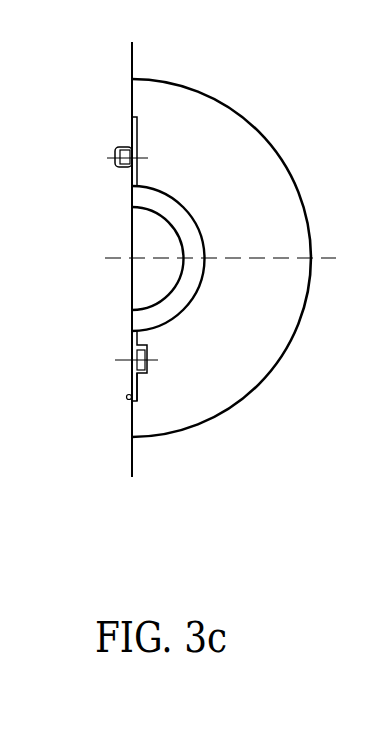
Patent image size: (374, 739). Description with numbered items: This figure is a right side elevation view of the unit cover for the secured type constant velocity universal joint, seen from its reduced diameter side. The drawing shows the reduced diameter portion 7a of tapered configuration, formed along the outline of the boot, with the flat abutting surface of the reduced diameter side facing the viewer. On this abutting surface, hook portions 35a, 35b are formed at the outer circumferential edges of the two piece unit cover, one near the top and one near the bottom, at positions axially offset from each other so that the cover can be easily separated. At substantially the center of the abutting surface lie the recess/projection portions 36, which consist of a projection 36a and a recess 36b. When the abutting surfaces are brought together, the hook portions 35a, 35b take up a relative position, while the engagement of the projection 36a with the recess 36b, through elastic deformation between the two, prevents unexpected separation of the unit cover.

The reduced diameter portion 7a is at (270, 207).
The hook portion 35a is at (132, 117).
The hook portion 35b is at (130, 394).
The recess/projection portions 36 is at (81, 260).
The projection 36a is at (118, 166).
The recess 36b is at (117, 325).